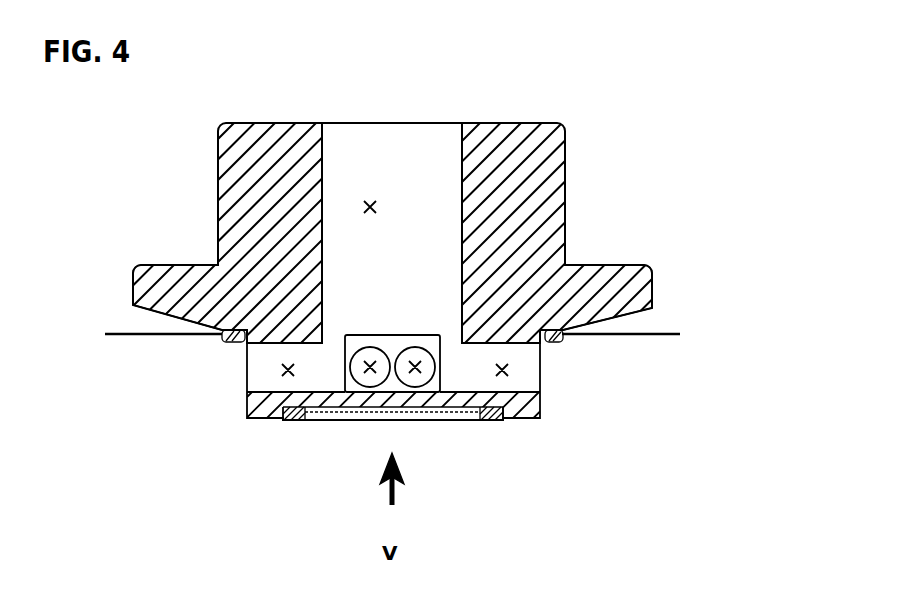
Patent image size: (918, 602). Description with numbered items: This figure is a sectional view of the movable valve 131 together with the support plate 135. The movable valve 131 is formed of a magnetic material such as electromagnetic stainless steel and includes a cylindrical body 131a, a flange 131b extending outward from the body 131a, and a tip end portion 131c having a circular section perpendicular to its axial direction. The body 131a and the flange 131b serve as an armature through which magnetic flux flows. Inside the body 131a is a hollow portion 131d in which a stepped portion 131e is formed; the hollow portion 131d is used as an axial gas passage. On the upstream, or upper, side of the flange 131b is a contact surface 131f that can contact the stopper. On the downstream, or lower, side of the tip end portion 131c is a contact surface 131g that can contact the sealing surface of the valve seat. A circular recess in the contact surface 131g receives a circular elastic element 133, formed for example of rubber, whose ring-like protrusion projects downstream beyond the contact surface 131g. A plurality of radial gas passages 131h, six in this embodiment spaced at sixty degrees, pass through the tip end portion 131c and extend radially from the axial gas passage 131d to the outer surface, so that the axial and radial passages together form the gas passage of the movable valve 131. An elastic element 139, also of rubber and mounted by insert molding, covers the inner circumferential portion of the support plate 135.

The movable valve 131 is at (600, 105).
The cylindrical body 131a is at (567, 195).
The flange 131b is at (600, 300).
The tip end portion 131c is at (247, 397).
The hollow portion (axial gas passage) 131d is at (355, 205).
The stepped portion 131e is at (447, 325).
The contact surface 131f is at (171, 266).
The contact surface 131g is at (518, 418).
The radial gas passages 131h is at (272, 373).
The elastic element 133 is at (293, 421).
The support plate 135 is at (643, 335).
The elastic element 139 is at (567, 335).